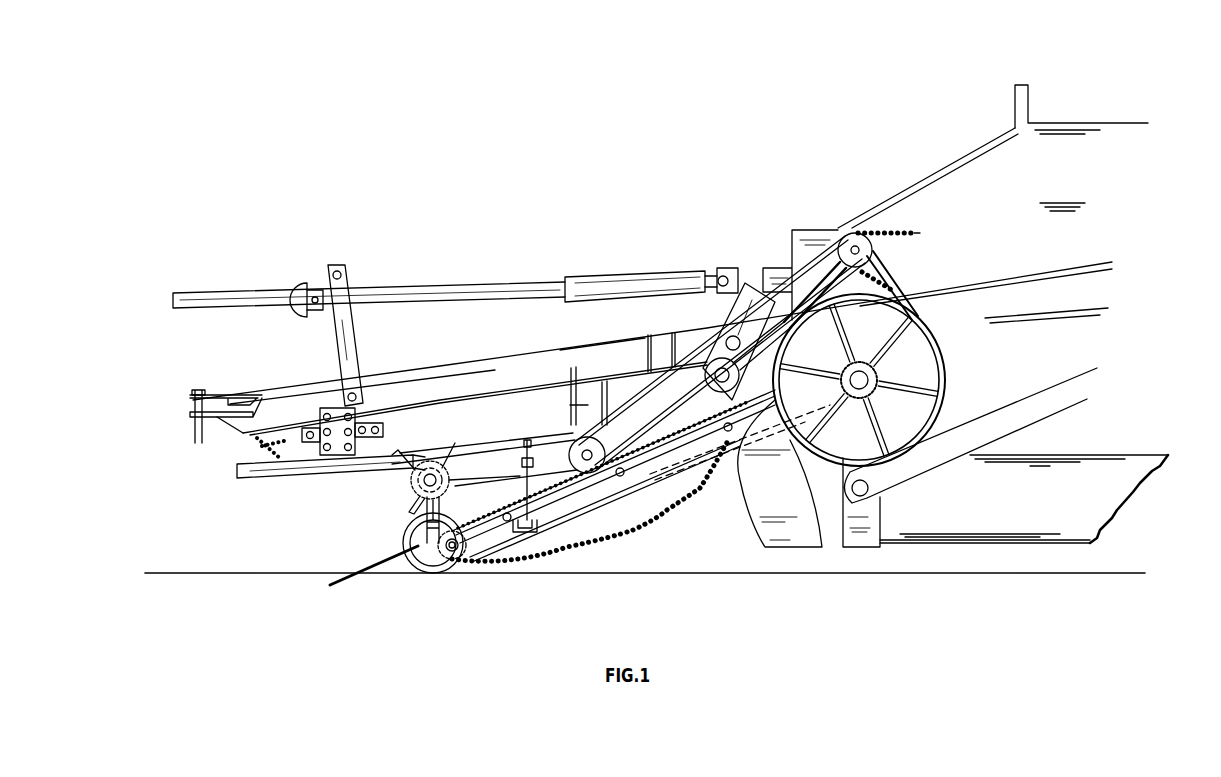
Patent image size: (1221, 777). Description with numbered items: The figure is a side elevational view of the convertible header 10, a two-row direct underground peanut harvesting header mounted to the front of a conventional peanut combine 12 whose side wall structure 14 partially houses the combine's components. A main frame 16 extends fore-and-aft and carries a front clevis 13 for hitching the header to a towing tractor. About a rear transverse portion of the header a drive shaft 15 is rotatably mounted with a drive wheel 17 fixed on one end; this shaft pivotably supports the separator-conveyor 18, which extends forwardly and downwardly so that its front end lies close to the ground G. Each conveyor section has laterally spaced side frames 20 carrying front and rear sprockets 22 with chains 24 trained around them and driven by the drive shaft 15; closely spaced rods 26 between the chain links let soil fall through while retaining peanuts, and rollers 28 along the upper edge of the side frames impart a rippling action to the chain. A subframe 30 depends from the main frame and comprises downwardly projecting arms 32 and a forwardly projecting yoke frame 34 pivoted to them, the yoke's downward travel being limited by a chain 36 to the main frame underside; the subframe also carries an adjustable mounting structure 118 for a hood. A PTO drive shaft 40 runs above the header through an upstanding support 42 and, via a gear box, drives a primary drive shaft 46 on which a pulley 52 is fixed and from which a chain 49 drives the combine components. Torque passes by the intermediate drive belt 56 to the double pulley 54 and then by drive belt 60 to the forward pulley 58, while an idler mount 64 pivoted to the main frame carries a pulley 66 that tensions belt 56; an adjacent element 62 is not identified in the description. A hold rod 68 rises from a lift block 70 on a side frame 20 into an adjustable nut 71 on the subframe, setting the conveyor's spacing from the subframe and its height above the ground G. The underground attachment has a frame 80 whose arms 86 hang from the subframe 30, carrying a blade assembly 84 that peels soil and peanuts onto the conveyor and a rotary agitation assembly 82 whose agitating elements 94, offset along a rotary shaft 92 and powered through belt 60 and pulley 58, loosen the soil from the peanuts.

The convertible header 10 is at (572, 262).
The peanut combine 12 is at (958, 110).
The front clevis 13 is at (232, 396).
The side wall structure 14 is at (1024, 388).
The drive shaft 15 is at (870, 380).
The main frame 16 is at (548, 356).
The drive wheel 17 is at (945, 382).
The separator-conveyor 18 is at (558, 562).
The side frames 20 is at (634, 470).
The front and rear sprockets 22 is at (475, 536).
The chains 24 is at (597, 540).
The rods 26 is at (652, 517).
The rollers 28 is at (504, 519).
The subframe 30 is at (224, 470).
The downwardly projecting arms 32 is at (567, 415).
The yoke frame 34 is at (272, 468).
The chain 36 is at (250, 443).
The PTO drive shaft 40 is at (398, 288).
The support 42 is at (350, 345).
The primary drive shaft 46 is at (858, 240).
The chain 49 is at (918, 234).
The pulley 52 is at (884, 232).
The double pulley 54 is at (604, 445).
The intermediate drive belt 56 is at (703, 334).
The forward pulley 58 is at (450, 480).
The drive belt 60 is at (507, 438).
The drive belt 62 is at (906, 290).
The idler mount 64 is at (766, 278).
The pulley 66 is at (740, 380).
The hold rod 68 is at (522, 486).
The lift block 70 is at (540, 521).
The adjustable nut 71 is at (546, 443).
The frame 80 is at (420, 568).
The rotary agitation assembly 82 is at (398, 487).
The blade assembly 84 is at (372, 563).
The arms 86 is at (425, 522).
The rotary shaft 92 is at (462, 452).
The agitating elements 94 is at (410, 506).
The adjustable mounting structure 118 is at (387, 432).
The ground G is at (258, 576).